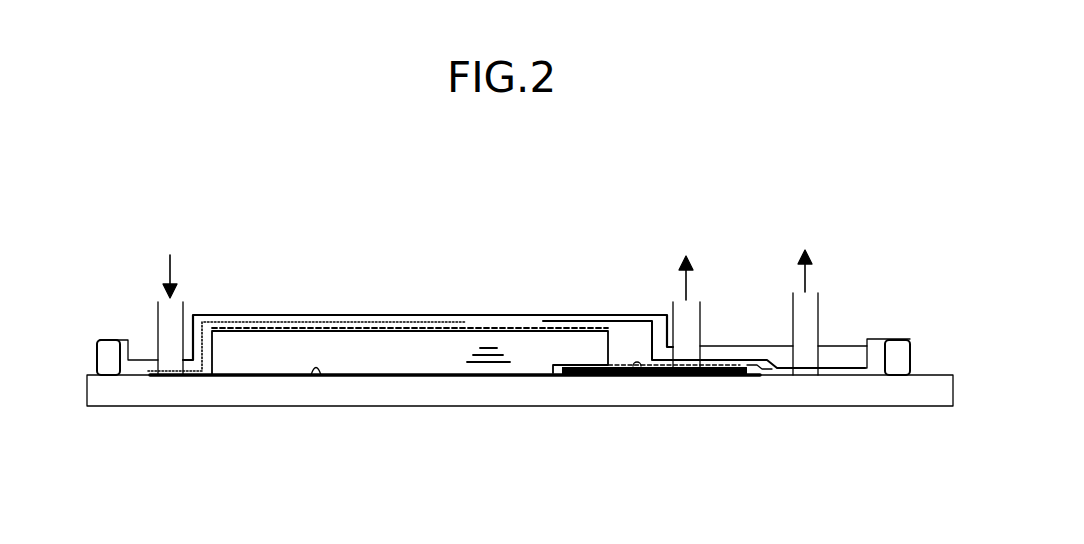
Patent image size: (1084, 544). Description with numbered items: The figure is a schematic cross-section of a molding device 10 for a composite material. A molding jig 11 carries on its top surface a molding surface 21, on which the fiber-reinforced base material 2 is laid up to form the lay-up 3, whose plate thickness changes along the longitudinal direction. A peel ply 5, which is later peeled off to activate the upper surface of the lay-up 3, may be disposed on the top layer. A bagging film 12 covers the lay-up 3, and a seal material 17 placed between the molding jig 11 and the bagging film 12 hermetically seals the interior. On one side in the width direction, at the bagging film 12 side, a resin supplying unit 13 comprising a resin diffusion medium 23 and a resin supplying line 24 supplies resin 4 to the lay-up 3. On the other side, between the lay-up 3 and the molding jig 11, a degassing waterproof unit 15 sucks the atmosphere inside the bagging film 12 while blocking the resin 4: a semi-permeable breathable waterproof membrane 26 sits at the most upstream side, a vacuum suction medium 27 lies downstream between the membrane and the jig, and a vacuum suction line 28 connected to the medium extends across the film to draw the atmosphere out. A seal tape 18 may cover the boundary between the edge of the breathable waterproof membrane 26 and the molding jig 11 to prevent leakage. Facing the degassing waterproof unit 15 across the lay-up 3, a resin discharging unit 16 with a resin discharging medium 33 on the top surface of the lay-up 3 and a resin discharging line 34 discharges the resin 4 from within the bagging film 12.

The molding device 10 is at (522, 220).
The molding jig 11 is at (250, 407).
The bagging film 12 is at (337, 313).
The resin supplying unit 13 is at (142, 297).
The degassing waterproof unit 15 is at (708, 287).
The resin discharging unit 16 is at (858, 285).
The seal material 17 is at (105, 351).
The seal tape 18 is at (763, 376).
The fiber-reinforced base material 2 is at (498, 362).
The molding surface 21 is at (318, 377).
The resin diffusion medium 23 is at (265, 321).
The resin supplying line 24 is at (157, 316).
The breathable waterproof membrane 26 is at (645, 376).
The vacuum suction medium 27 is at (718, 376).
The vacuum suction line 28 is at (701, 325).
The lay-up 3 is at (392, 357).
The resin discharging medium 33 is at (567, 319).
The resin discharging line 34 is at (819, 310).
The resin 4 is at (172, 268).
The peel ply 5 is at (486, 325).